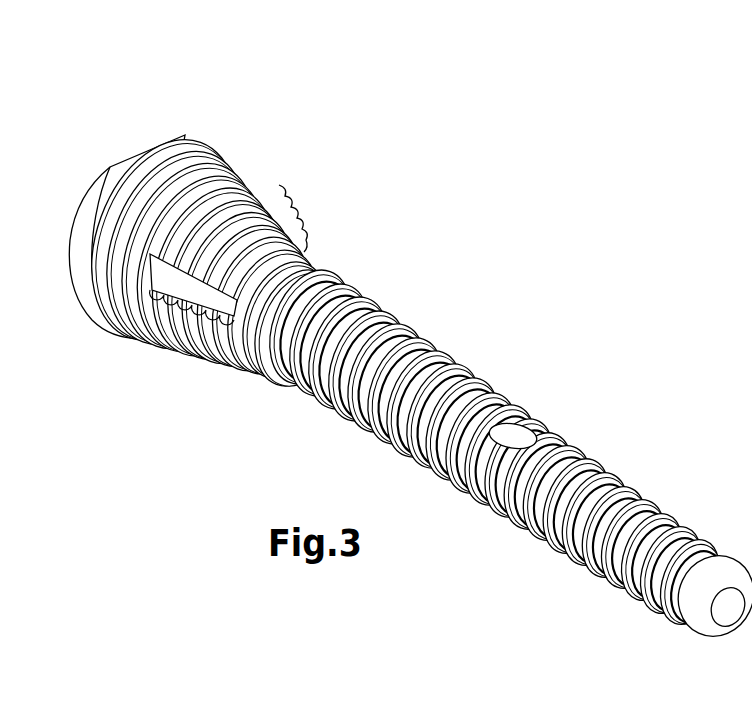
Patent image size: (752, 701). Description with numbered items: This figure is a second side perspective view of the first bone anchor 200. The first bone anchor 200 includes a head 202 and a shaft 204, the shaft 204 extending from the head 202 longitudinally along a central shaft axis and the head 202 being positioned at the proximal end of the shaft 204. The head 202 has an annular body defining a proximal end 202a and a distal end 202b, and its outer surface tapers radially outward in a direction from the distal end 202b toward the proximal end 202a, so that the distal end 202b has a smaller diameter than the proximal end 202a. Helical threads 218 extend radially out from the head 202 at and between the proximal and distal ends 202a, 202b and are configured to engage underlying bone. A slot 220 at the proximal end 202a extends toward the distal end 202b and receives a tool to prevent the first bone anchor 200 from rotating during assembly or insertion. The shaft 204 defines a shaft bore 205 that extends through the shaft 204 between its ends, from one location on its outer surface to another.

The first bone anchor 200 is at (393, 332).
The head 202 is at (218, 158).
The proximal end 202a is at (184, 133).
The distal end 202b is at (302, 258).
The shaft 204 is at (463, 367).
The shaft bore 205 is at (520, 425).
The helical threads 218 is at (247, 183).
The slot 220 is at (131, 165).